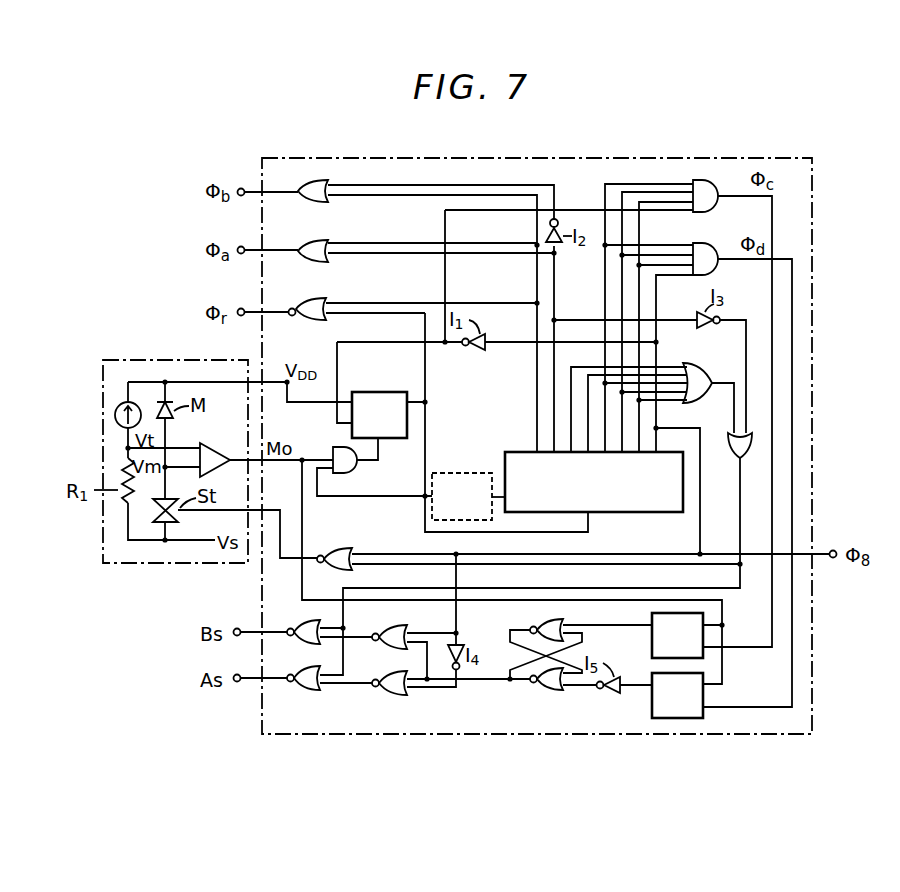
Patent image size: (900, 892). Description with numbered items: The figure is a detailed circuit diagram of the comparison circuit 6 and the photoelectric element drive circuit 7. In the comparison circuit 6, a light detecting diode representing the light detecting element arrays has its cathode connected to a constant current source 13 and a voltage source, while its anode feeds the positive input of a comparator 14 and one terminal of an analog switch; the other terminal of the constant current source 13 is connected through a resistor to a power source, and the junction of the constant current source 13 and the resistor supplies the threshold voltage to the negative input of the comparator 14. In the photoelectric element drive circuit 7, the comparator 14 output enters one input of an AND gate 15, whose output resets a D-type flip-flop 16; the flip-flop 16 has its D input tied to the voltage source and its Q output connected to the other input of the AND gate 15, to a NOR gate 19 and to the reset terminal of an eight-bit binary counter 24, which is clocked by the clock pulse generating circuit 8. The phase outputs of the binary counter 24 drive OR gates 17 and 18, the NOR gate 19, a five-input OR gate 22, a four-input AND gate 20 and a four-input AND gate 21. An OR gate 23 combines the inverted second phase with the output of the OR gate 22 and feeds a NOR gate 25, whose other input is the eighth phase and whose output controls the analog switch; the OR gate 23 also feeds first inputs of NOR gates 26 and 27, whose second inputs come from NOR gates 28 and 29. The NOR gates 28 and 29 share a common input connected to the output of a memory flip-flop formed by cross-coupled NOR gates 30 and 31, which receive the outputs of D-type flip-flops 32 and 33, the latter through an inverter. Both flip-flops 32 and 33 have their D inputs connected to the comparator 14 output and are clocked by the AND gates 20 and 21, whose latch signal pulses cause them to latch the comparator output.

The comparison circuit 6 is at (153, 360).
The photoelectric element drive circuit 7 is at (775, 158).
The clock pulse generating circuit 8 is at (452, 473).
The constant current source 13 is at (114, 412).
The comparator 14 is at (205, 445).
The AND gate 15 is at (340, 447).
The D-type flip-flop 16 is at (368, 392).
The OR gate 17 is at (329, 186).
The OR gate 18 is at (320, 242).
The NOR gate 19 is at (320, 300).
The four-input AND gate 20 is at (703, 180).
The four-input AND gate 21 is at (702, 248).
The five-input OR gate 22 is at (688, 367).
The OR gate 23 is at (730, 448).
The eight-bit binary counter 24 is at (622, 512).
The NOR gate 25 is at (335, 548).
The NOR gate 26 is at (305, 620).
The NOR gate 27 is at (305, 667).
The NOR gate 28 is at (387, 632).
The NOR gate 29 is at (387, 672).
The NOR gate 30 is at (555, 620).
The NOR gate 31 is at (552, 691).
The D-type flip-flop 32 is at (652, 641).
The D-type flip-flop 33 is at (652, 701).